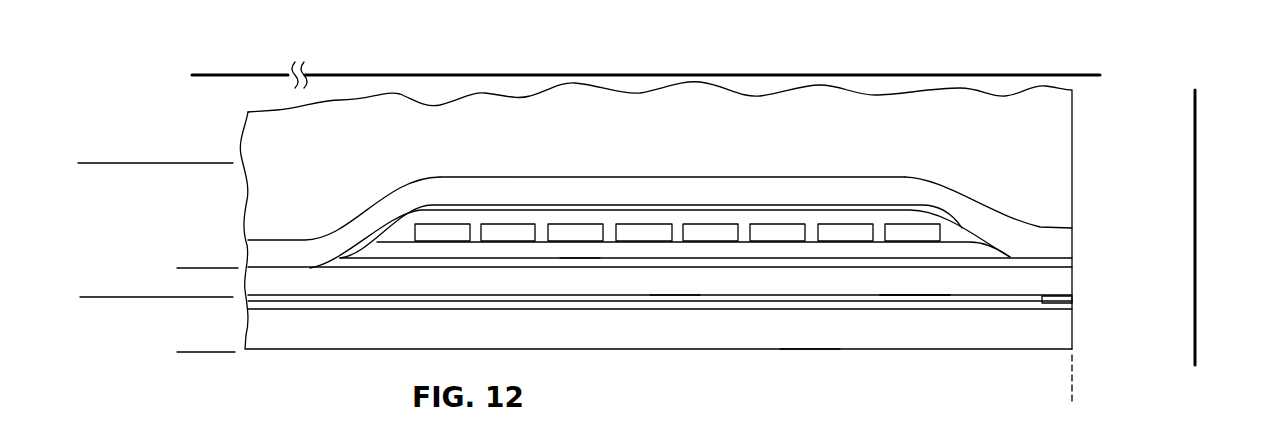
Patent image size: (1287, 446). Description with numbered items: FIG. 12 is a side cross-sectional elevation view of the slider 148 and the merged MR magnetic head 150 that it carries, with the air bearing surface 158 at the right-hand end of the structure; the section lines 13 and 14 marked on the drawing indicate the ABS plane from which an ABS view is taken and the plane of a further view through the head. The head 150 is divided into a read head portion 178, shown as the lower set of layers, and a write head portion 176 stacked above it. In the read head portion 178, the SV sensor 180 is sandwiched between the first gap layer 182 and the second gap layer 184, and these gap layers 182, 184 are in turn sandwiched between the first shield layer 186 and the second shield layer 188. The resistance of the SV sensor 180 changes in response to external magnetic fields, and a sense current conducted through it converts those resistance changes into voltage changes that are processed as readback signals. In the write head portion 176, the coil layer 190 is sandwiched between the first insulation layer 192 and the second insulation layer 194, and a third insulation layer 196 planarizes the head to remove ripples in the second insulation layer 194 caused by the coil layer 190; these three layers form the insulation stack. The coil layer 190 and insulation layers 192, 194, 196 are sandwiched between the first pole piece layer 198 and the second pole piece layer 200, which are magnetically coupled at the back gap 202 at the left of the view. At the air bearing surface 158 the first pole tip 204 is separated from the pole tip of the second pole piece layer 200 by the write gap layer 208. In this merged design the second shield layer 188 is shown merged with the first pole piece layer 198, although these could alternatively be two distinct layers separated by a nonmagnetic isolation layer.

The section line 14- 14 is at (200, 62).
The section line 13- 13 is at (1212, 98).
The magnetic head 150 is at (225, 122).
The slider 148 is at (1057, 125).
The back gap 202 is at (290, 240).
The second pole piece layer 200 is at (822, 186).
The second insulation layer 194 is at (957, 228).
The third insulation layer 196 is at (480, 208).
The coil layer 190 is at (707, 228).
The first pole tip 204 is at (1068, 237).
The write gap layer 208 is at (1072, 257).
The first gap layer 182 is at (731, 308).
The SV sensor 180 is at (1073, 300).
The first insulation layer 192 is at (582, 252).
The second gap layer 184 is at (693, 298).
The first shield layer 186 is at (807, 333).
The second shield layer 188 is at (912, 280).
The first pole piece layer 198 is at (912, 280).
The air bearing surface 158 is at (1072, 395).
The write head portion 176 is at (192, 258).
The read head portion 178 is at (192, 365).